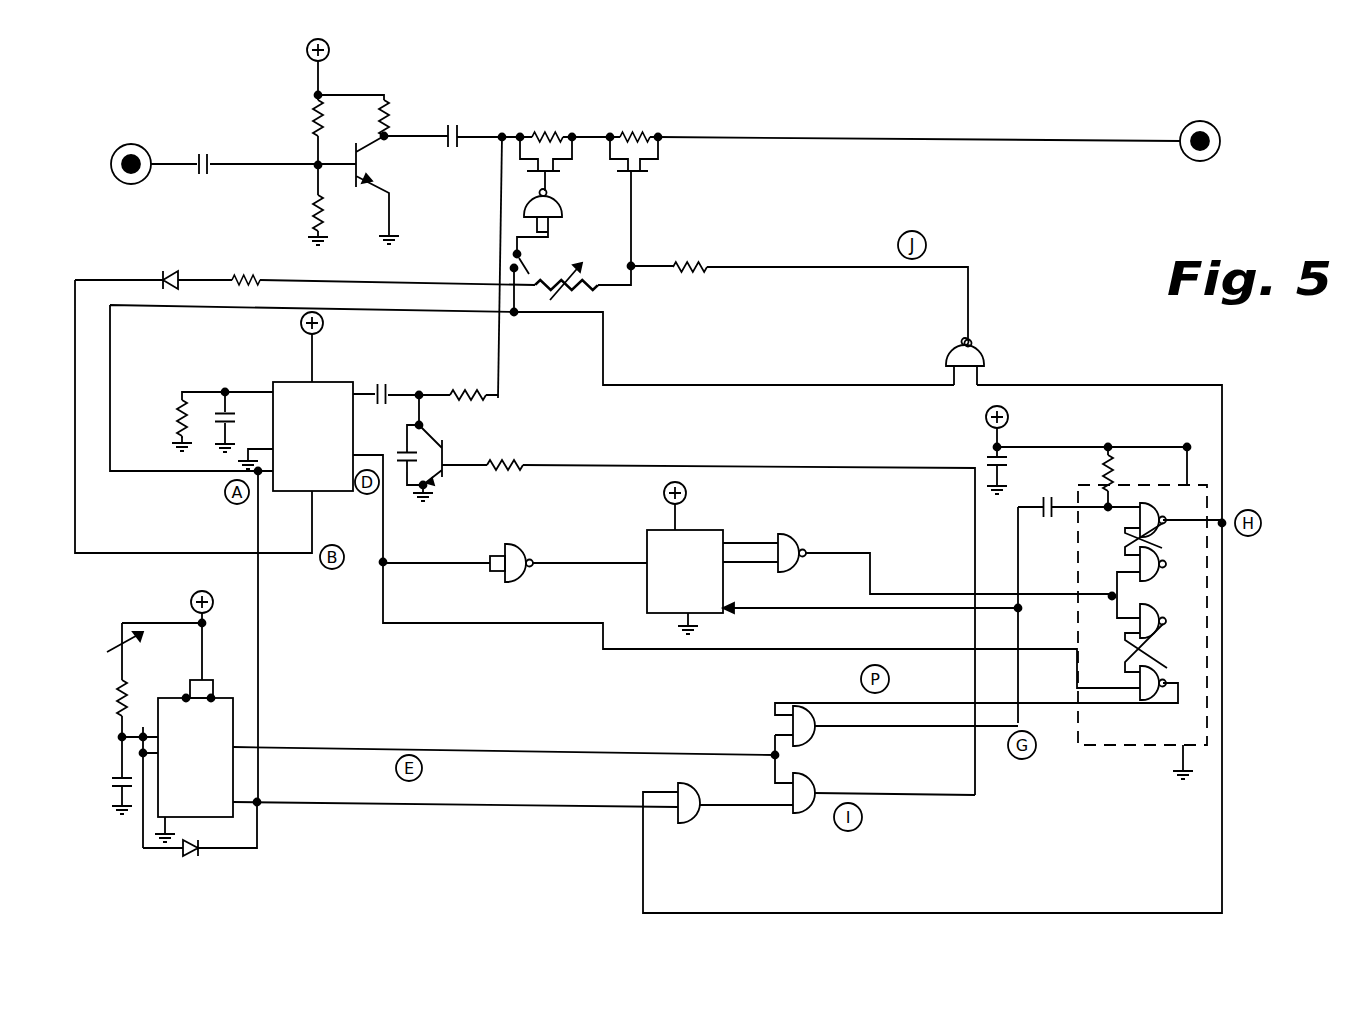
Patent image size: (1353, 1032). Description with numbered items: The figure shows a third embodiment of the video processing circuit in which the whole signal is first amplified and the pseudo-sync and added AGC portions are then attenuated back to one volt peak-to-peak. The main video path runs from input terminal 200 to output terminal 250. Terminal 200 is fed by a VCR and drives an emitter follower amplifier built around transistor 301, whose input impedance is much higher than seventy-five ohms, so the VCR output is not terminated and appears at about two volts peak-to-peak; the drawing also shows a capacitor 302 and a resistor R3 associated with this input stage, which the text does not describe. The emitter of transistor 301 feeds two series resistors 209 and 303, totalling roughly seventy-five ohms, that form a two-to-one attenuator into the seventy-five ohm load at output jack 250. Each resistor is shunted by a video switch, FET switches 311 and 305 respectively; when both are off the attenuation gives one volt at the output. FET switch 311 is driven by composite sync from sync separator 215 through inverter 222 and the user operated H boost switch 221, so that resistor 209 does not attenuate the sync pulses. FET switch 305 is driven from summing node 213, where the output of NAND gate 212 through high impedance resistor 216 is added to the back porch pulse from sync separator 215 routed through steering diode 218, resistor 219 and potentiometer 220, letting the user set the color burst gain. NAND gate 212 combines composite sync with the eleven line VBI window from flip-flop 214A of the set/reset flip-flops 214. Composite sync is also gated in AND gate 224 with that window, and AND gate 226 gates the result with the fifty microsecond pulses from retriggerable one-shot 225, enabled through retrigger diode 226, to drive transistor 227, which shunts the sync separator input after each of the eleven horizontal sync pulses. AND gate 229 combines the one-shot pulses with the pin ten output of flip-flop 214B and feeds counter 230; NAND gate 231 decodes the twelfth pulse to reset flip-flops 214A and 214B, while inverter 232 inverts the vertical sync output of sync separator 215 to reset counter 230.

The input terminal 200 is at (131, 143).
The transistor 301 is at (372, 168).
The resistor R3 is at (348, 245).
The capacitor 302 is at (455, 125).
The FET switch 311 is at (512, 114).
The resistor 209 is at (548, 130).
The resistor 303 is at (640, 130).
The FET switch 305 is at (660, 150).
The inverter 222 is at (556, 212).
The switch 221 is at (524, 262).
The summing node 213 is at (636, 262).
The resistor 216 is at (700, 257).
The variable attenuation potentiometer 220 is at (597, 290).
The NAND gate 212 is at (975, 348).
The output terminal 250 is at (1185, 152).
The steering diode 218 is at (168, 268).
The resistor 219 is at (250, 268).
The sync separator 215 is at (291, 381).
The transistor 227 is at (450, 450).
The inverter 232 is at (520, 541).
The counter 230 is at (700, 529).
The NAND gate 231 is at (796, 536).
The set/reset flip-flops 214 is at (1036, 624).
The flip-flop 214A is at (1178, 562).
The flip-flop 214B is at (1172, 642).
The AND gate 229 is at (800, 704).
The AND gate 226 is at (802, 816).
The AND gate 224 is at (690, 826).
The retriggerable one-shot 225 is at (170, 694).